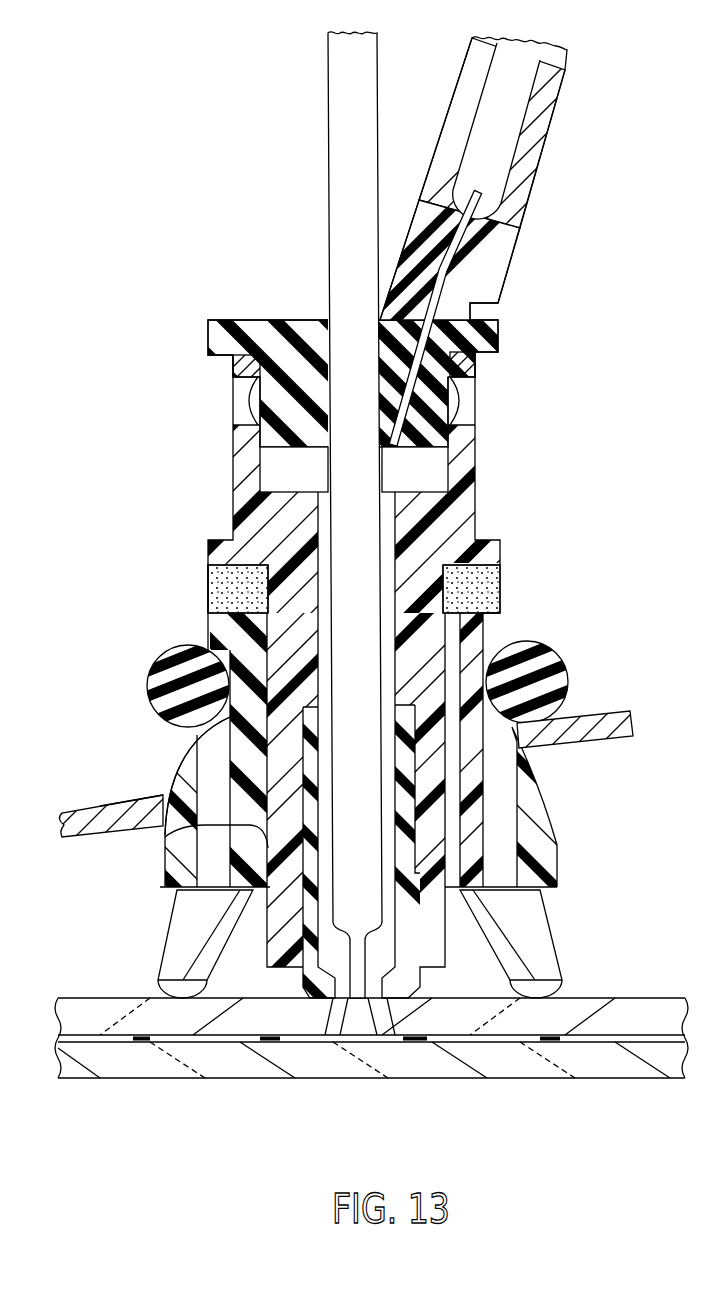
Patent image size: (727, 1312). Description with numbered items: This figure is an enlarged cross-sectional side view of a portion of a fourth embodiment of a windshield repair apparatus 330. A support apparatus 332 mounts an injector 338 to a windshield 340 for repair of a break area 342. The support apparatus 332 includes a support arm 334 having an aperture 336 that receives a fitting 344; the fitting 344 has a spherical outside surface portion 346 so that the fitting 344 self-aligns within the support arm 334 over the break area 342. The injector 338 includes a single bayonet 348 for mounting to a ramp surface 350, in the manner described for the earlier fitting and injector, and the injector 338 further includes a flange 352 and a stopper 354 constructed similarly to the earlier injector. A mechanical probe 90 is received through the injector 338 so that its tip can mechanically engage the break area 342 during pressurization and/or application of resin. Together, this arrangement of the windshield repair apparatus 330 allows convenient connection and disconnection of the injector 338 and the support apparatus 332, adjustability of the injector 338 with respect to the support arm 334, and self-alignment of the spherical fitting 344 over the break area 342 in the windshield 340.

The mechanical probe 90 is at (327, 178).
The windshield repair apparatus 330 is at (123, 377).
The support apparatus 332 is at (97, 806).
The support arm 334 is at (120, 802).
The aperture 336 is at (166, 790).
The injector 338 is at (475, 462).
The windshield 340 is at (559, 1078).
The break area 342 is at (362, 1027).
The fitting 344 is at (557, 843).
The spherical outside surface portion 346 is at (547, 798).
The bayonet 348 is at (243, 918).
The ramp surface 350 is at (165, 837).
The flange 352 is at (500, 547).
The stopper 354 is at (500, 332).